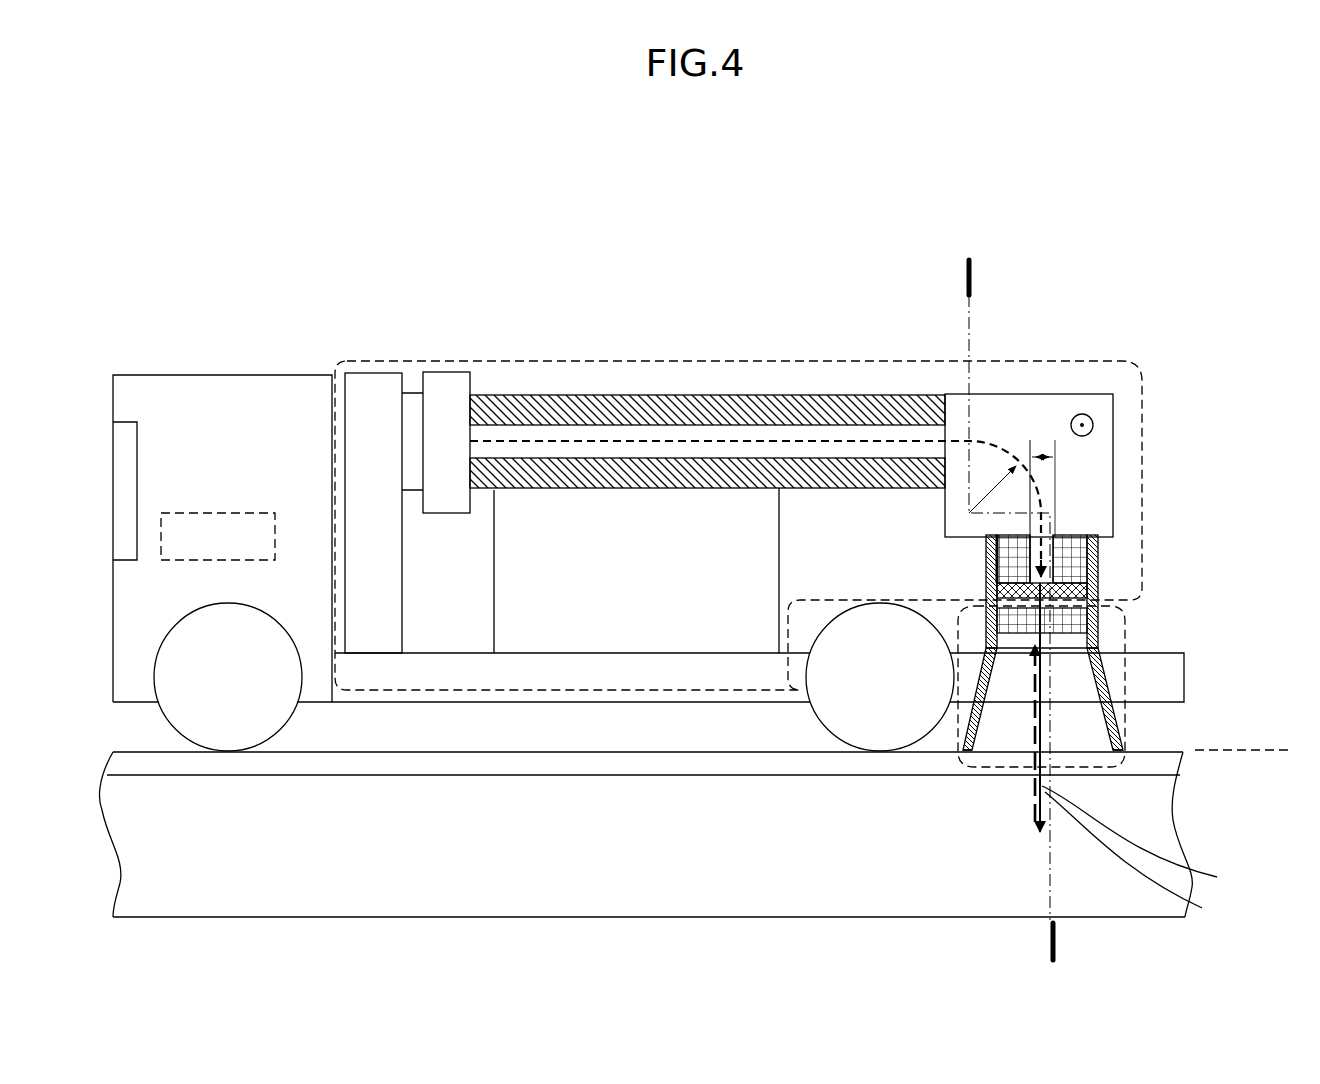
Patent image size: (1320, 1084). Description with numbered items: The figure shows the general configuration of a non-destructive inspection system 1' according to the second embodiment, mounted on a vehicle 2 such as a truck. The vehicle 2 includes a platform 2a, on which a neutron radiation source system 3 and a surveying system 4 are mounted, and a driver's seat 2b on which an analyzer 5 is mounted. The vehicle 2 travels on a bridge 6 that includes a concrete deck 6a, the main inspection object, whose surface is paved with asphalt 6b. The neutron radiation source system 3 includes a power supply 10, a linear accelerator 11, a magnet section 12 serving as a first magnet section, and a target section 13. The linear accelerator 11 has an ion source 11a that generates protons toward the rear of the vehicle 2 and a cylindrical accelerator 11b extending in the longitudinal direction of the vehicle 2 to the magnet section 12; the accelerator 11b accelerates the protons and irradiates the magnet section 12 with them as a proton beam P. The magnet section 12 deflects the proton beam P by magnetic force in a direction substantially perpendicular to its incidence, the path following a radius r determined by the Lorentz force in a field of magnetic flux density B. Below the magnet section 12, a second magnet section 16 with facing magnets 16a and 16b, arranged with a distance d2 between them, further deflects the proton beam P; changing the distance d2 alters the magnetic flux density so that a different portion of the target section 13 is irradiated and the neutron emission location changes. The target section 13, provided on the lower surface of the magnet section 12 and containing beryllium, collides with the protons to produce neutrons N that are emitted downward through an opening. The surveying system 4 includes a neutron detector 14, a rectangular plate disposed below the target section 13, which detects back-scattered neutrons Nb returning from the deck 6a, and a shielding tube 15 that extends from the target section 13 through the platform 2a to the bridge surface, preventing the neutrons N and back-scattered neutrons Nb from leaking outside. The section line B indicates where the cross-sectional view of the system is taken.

The non-destructive inspection system 1' is at (701, 541).
The vehicle 2 is at (140, 342).
The platform 2a is at (469, 655).
The driver's seat 2b is at (287, 373).
The neutron radiation source system 3 is at (760, 356).
The surveying system 4 is at (1103, 316).
The analyzer 5 is at (218, 513).
The bridge 6 is at (1265, 765).
The concrete deck 6a is at (1175, 822).
The asphalt 6b is at (1183, 759).
The power supply 10 is at (375, 372).
The linear accelerator 11 is at (620, 300).
The ion source 11a is at (470, 368).
The accelerator 11b is at (597, 394).
The magnet section 12 is at (1020, 394).
The target section 13 is at (995, 592).
The neutron detector 14 is at (1085, 623).
The shielding tube 15 is at (1117, 727).
The second magnet section 16 is at (1192, 527).
The magnet 16a is at (1063, 548).
The magnet 16b is at (1033, 562).
The proton beam P is at (1045, 490).
The neutrons N is at (1132, 861).
The back-scattered neutrons Nb is at (1146, 841).
The magnetic flux density B is at (980, 278).
The distance d2 is at (1042, 479).
The radius r is at (992, 489).